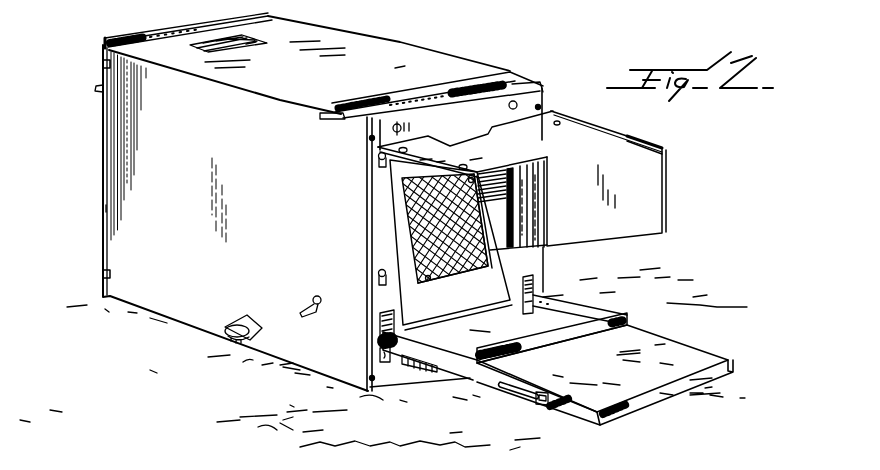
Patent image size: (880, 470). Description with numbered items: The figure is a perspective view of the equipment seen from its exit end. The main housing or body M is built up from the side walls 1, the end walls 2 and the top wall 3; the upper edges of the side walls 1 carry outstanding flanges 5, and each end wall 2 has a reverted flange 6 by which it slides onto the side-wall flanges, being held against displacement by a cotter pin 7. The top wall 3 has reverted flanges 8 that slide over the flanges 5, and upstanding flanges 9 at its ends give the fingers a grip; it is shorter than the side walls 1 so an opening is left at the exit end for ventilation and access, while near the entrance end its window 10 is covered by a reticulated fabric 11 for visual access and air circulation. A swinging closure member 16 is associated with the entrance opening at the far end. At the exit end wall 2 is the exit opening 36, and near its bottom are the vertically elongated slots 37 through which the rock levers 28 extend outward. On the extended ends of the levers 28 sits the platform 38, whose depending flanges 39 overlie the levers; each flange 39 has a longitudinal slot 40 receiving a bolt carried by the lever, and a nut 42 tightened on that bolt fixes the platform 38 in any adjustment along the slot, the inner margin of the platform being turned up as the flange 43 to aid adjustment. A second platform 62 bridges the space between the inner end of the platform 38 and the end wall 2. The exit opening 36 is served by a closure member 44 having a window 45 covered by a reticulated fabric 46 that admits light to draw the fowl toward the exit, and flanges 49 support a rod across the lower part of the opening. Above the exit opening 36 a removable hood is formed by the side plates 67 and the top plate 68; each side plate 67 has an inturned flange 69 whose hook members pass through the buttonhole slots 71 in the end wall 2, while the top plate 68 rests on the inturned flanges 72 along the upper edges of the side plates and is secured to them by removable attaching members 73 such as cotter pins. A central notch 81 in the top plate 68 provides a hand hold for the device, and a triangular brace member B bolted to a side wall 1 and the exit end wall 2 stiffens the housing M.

The side wall 1 is at (127, 171).
The end wall 2 is at (544, 272).
The top wall 3 is at (354, 44).
The outstanding flange 5 is at (343, 123).
The reverted flange 6 is at (106, 208).
The cotter pin 7 is at (103, 64).
The reverted flange 8 is at (299, 316).
The upstanding flange 9 is at (131, 39).
The opening or window 10 is at (250, 45).
The reticulated fabric 11 is at (213, 40).
The closure member 16 is at (100, 89).
The rock lever 28 is at (438, 364).
The exit opening 36 is at (404, 233).
The elongated opening or slot 37 is at (382, 353).
The platform 38 is at (690, 352).
The depending flange 39 is at (735, 373).
The slot 40 is at (527, 393).
The nut 42 is at (545, 393).
The upstanding flange 43 is at (608, 320).
The closure member 44 is at (498, 250).
The window 45 is at (470, 280).
The reticulated fabric 46 is at (423, 200).
The flange 49 is at (508, 176).
The platform 62 is at (545, 327).
The side plate 67 is at (654, 204).
The top plate 68 is at (590, 132).
The inturned flange 69 is at (541, 161).
The buttonhole slot 71 is at (377, 158).
The inturned flange 72 is at (646, 152).
The removable attaching member 73 is at (620, 139).
The notch or recess 81 is at (496, 130).
The main housing or body M is at (402, 55).
The brace member B is at (512, 86).